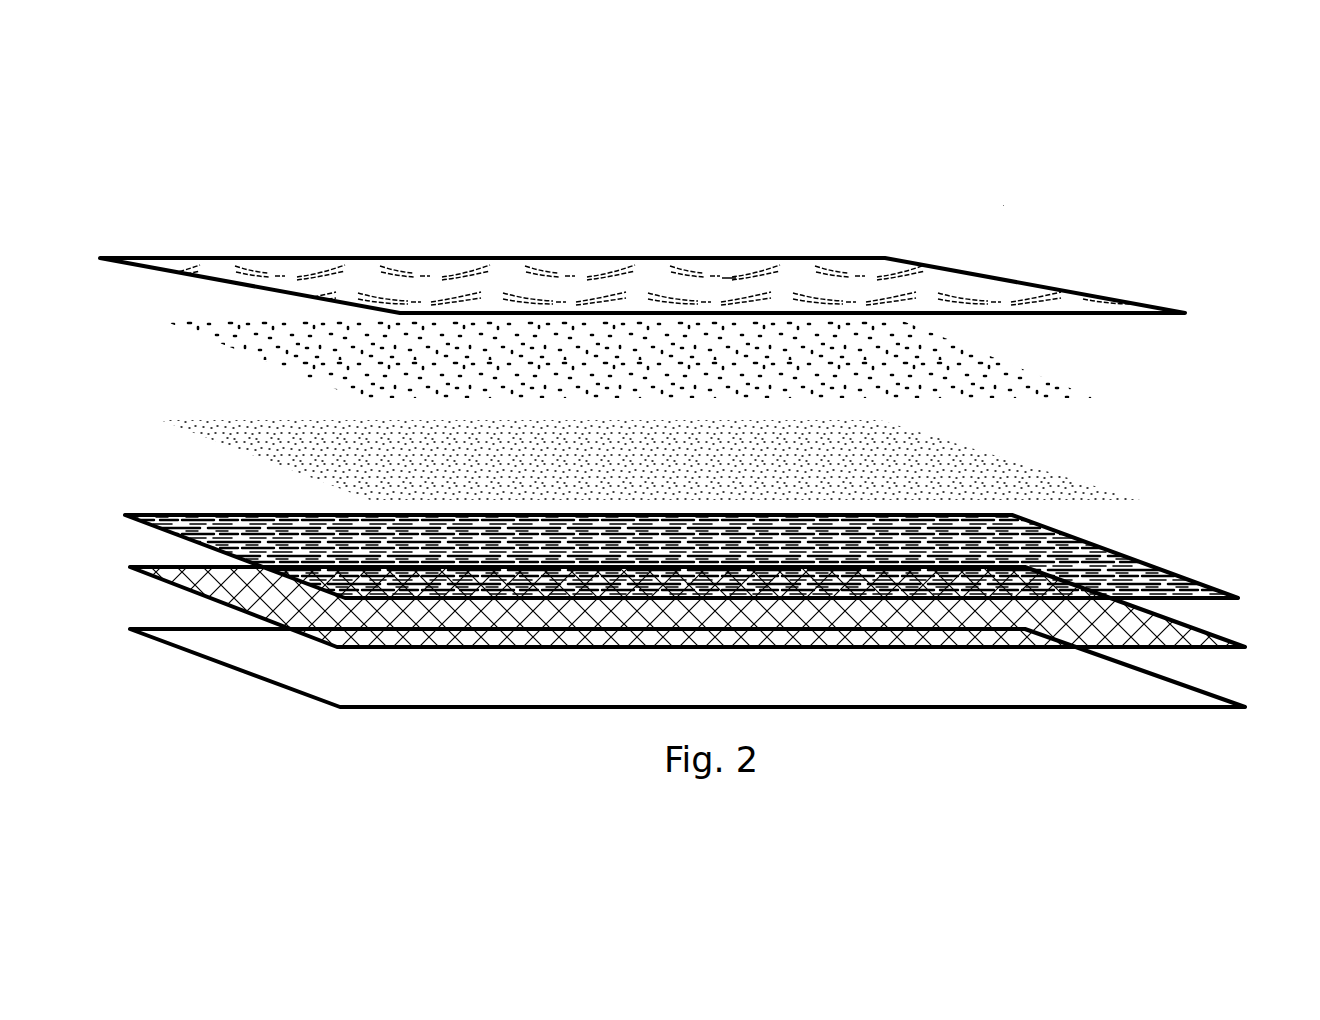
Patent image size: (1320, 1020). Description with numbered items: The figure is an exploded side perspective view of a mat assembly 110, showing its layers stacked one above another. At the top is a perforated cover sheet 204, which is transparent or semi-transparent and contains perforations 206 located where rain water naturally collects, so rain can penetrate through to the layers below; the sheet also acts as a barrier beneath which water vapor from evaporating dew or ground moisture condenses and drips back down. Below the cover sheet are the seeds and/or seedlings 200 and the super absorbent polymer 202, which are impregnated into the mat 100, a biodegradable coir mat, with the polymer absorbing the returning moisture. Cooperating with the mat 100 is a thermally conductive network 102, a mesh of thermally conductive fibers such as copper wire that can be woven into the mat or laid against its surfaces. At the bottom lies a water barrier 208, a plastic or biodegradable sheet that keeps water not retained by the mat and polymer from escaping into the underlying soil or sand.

The mat assembly 110 is at (1005, 204).
The perforated cover sheet 204 is at (1083, 292).
The perforations 206 is at (727, 278).
The seeds and/or seedlings 200 is at (1090, 398).
The super absorbent polymer (SAP) 202 is at (1090, 485).
The mat 100 is at (1145, 563).
The thermally conductive network 102 is at (1210, 630).
The water barrier 208 is at (1197, 688).